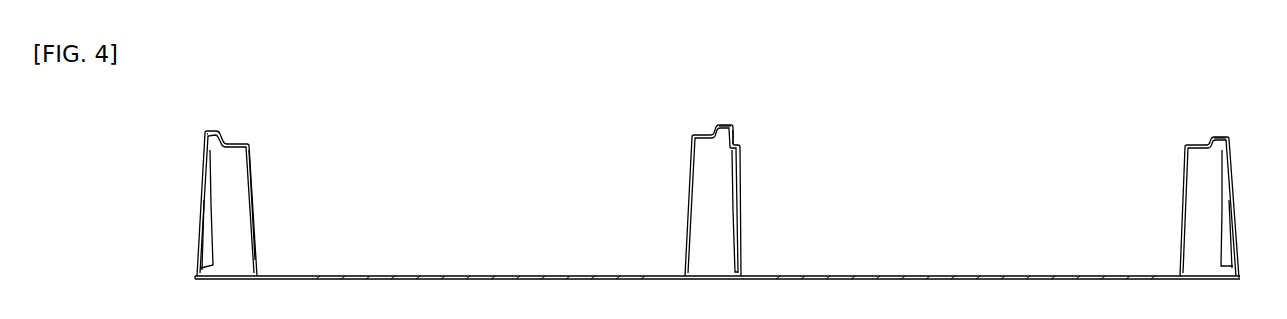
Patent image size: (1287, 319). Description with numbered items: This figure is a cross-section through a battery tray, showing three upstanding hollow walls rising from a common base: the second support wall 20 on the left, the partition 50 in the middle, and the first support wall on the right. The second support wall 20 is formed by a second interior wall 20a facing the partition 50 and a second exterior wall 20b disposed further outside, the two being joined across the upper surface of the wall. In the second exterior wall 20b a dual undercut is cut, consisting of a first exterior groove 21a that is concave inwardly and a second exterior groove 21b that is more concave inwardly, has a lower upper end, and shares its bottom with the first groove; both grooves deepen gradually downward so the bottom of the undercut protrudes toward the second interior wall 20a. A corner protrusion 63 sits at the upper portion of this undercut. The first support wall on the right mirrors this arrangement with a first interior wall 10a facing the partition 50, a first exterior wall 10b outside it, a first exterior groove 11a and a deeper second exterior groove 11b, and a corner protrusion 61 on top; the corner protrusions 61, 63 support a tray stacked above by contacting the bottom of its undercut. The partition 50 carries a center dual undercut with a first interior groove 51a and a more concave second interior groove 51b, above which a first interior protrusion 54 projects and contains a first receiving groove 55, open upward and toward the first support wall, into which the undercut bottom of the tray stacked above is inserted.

The second support wall 20 is at (245, 130).
The corner protrusion 63 is at (212, 130).
The second interior wall 20a is at (252, 184).
The first exterior groove 21a is at (203, 196).
The second exterior groove 21b is at (208, 258).
The second exterior wall 20b is at (199, 228).
The partition 50 is at (690, 150).
The first interior protrusion 54 is at (727, 123).
The first receiving groove 55 is at (735, 133).
The first interior groove 51a is at (744, 172).
The second interior groove 51b is at (744, 230).
The first interior wall 10a is at (1181, 205).
The corner protrusion 61 is at (1220, 133).
The first exterior groove 11a is at (1232, 197).
The second exterior groove 11b is at (1225, 253).
The first exterior wall 10b is at (1230, 220).